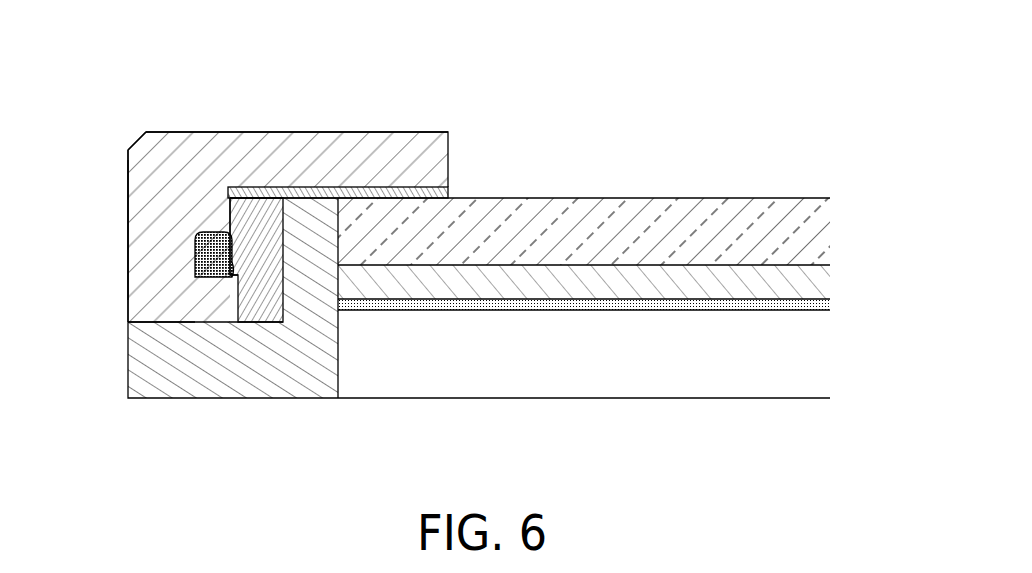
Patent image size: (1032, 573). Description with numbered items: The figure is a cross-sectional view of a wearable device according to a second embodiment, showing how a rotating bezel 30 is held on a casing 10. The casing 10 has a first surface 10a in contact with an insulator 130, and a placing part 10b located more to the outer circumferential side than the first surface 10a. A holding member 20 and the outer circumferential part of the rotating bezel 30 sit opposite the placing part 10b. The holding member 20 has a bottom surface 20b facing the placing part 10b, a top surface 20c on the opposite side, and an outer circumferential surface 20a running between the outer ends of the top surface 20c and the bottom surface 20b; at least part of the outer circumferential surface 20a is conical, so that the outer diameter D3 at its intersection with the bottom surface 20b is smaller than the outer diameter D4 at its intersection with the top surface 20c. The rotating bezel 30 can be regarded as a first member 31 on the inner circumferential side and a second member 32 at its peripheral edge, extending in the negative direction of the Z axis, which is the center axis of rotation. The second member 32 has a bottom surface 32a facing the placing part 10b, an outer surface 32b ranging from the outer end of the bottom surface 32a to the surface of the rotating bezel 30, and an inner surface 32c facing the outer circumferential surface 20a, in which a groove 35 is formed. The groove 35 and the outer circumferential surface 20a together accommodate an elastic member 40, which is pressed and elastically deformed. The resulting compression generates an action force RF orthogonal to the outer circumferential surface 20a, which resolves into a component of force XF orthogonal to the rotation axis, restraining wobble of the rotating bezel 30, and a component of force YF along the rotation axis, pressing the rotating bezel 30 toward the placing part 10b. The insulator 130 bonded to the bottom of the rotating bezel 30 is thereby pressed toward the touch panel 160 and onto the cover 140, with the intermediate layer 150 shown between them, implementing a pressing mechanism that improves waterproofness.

The casing 10 is at (130, 366).
The first surface 10a is at (312, 204).
The placing part 10b is at (167, 327).
The holding member 20 is at (257, 200).
The outer circumferential surface 20a is at (287, 202).
The bottom surface 20b is at (270, 315).
The top surface 20c is at (228, 212).
The rotating bezel 30 is at (448, 155).
The first member 31 is at (422, 142).
The second member 32 is at (136, 216).
The bottom surface 32a is at (145, 318).
The outer surface 32b is at (133, 178).
The inner surface 32c is at (235, 275).
The groove 35 is at (197, 231).
The elastic member 40 is at (134, 193).
The insulator 130 is at (449, 194).
The cover 140 is at (828, 225).
The second layer 150 is at (825, 280).
The touch panel 160 is at (832, 303).
The outer diameter D3 is at (238, 275).
The outer diameter D4 is at (283, 187).
The component of force XF is at (230, 251).
The action force RF is at (236, 252).
The component of force YF is at (208, 304).
The Z-axis Z is at (803, 430).